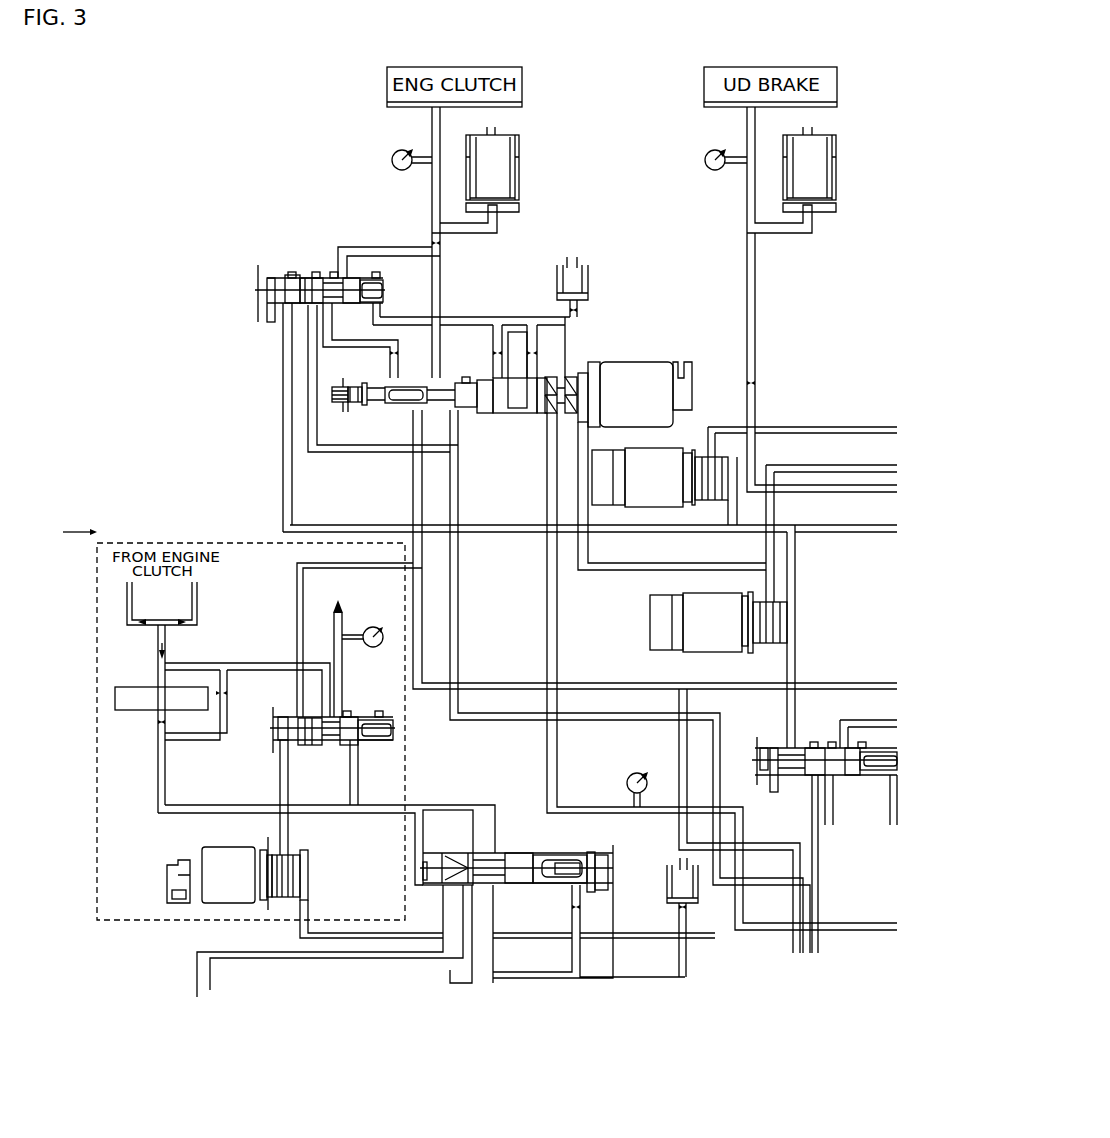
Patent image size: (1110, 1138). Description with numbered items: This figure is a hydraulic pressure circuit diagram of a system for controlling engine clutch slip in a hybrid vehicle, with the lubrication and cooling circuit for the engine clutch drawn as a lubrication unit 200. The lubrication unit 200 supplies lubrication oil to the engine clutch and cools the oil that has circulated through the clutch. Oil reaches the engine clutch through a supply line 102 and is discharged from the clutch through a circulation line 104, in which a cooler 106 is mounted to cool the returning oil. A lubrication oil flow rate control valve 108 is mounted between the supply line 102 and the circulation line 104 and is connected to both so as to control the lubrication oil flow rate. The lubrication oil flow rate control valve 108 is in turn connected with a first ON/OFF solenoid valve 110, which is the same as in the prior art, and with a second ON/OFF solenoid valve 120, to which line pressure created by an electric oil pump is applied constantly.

The lubrication unit 200 is at (97, 568).
The supply line 102 is at (334, 617).
The circulation line 104 is at (158, 642).
The cooler 106 is at (130, 712).
The lubrication oil flow rate control valve 108 is at (312, 742).
The first ON/OFF solenoid valve 110 is at (710, 598).
The second ON/OFF solenoid valve 120 is at (212, 858).